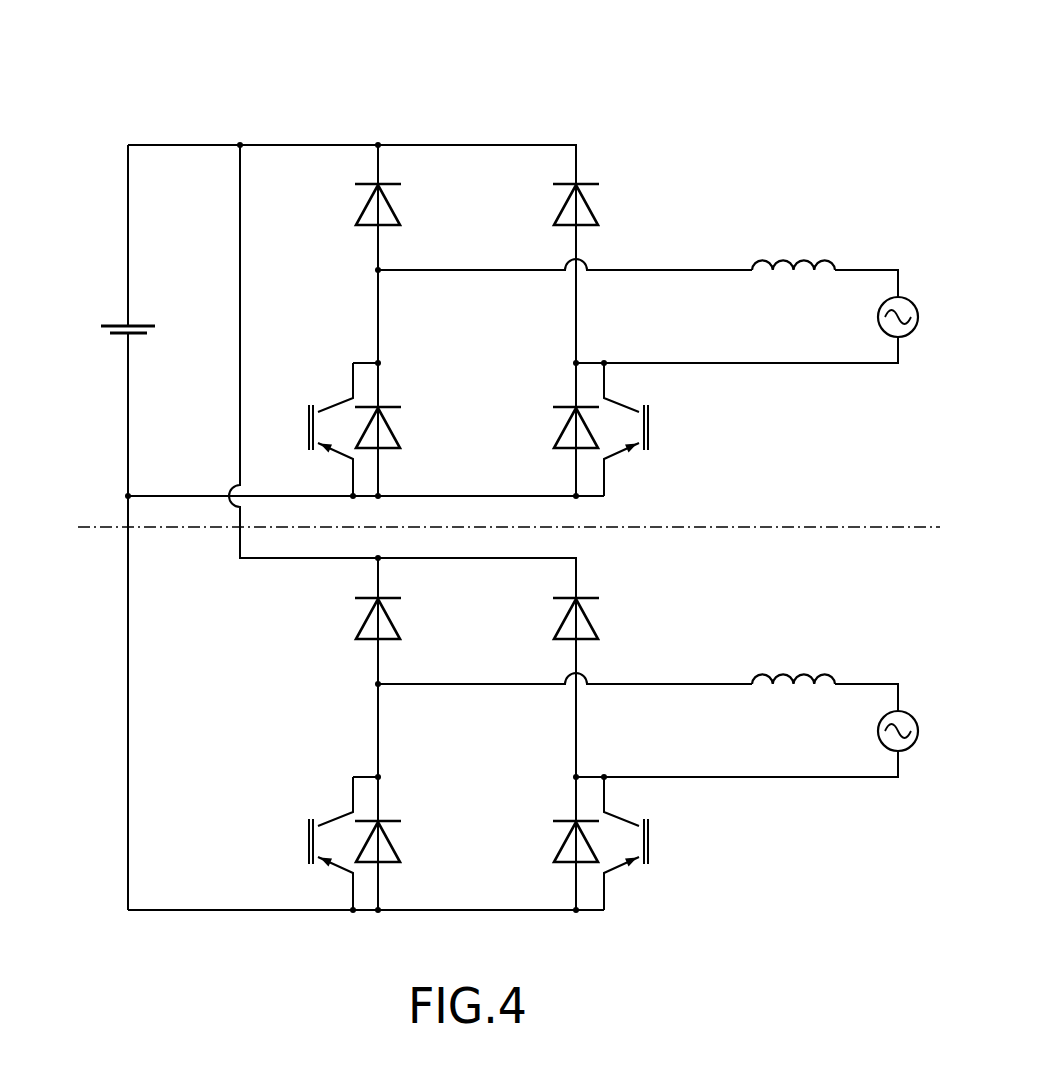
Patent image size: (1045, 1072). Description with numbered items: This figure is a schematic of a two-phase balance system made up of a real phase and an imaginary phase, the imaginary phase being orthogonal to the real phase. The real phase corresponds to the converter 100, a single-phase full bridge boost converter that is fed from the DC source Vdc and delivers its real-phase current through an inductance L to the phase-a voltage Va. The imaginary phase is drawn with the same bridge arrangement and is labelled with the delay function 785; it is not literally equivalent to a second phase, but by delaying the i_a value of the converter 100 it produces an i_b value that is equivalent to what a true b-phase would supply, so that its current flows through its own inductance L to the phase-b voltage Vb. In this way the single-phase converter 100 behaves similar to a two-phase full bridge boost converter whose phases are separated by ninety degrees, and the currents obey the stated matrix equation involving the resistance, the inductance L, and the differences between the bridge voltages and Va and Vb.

The converter 100 is at (480, 361).
The delay function 785 is at (476, 734).
The inductance L is at (793, 458).
The DC voltage source Vdc is at (105, 330).
The v_a Va is at (882, 320).
The v_b Vb is at (880, 734).